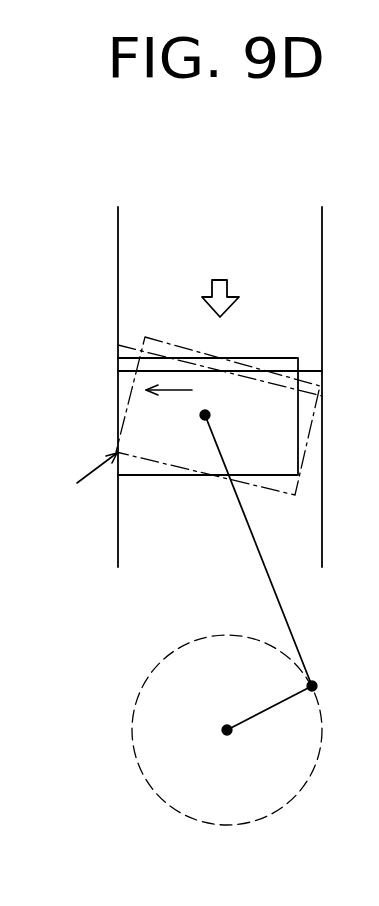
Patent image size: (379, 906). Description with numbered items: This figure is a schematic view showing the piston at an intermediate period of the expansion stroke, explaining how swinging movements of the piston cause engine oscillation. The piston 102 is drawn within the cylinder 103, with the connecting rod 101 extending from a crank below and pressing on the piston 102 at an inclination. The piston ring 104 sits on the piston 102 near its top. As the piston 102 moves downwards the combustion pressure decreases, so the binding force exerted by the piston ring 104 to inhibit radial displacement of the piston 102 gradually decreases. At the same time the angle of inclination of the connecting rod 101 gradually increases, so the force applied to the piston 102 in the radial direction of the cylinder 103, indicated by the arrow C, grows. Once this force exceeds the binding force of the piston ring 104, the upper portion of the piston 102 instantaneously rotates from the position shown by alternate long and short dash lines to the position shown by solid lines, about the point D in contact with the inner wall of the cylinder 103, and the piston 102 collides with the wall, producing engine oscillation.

The connecting rod 101 is at (274, 592).
The piston 102 is at (138, 475).
The cylinder 103 is at (118, 547).
The piston ring 104 is at (253, 373).
The arrow C is at (177, 393).
The point D is at (83, 483).